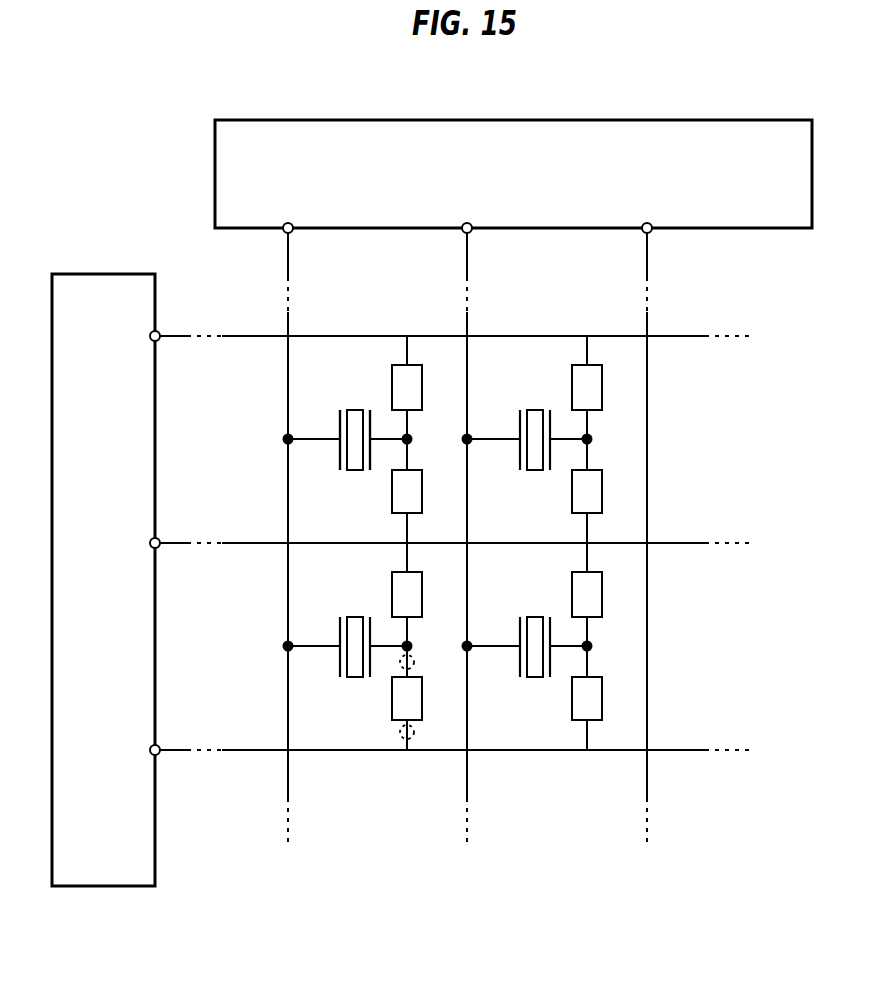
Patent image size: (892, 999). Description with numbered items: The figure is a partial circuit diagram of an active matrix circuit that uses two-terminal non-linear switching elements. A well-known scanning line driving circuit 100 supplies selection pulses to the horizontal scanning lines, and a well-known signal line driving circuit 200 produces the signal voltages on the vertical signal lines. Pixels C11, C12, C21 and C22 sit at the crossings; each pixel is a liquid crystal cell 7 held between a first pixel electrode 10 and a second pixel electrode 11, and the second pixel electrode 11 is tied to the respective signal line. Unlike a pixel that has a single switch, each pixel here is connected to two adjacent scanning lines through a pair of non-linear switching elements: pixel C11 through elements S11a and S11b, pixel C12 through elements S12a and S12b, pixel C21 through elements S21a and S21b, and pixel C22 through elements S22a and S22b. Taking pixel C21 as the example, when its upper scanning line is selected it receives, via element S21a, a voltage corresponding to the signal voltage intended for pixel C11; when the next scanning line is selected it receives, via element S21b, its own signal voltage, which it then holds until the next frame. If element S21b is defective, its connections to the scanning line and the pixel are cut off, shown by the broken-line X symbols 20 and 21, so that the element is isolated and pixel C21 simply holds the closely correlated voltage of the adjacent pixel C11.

The signal line driving circuit 200 is at (215, 197).
The scanning line driving circuit 100 is at (108, 274).
The non-linear switching element S11a is at (392, 386).
The non-linear switching element S11b is at (392, 495).
The non-linear switching element S12a is at (572, 386).
The non-linear switching element S12b is at (572, 495).
The non-linear switching element S21a is at (392, 590).
The non-linear switching element S21b is at (392, 700).
The non-linear switching element S22a is at (572, 590).
The non-linear switching element S22b is at (572, 700).
The pixel C11 is at (347, 430).
The pixel C12 is at (527, 430).
The pixel C21 is at (347, 637).
The pixel C22 is at (527, 637).
The liquid crystal cell 7 is at (355, 471).
The first pixel electrode 10 is at (373, 460).
The second pixel electrode 11 is at (340, 456).
The broken line symbol X 20 is at (415, 736).
The broken line symbol X 21 is at (415, 666).